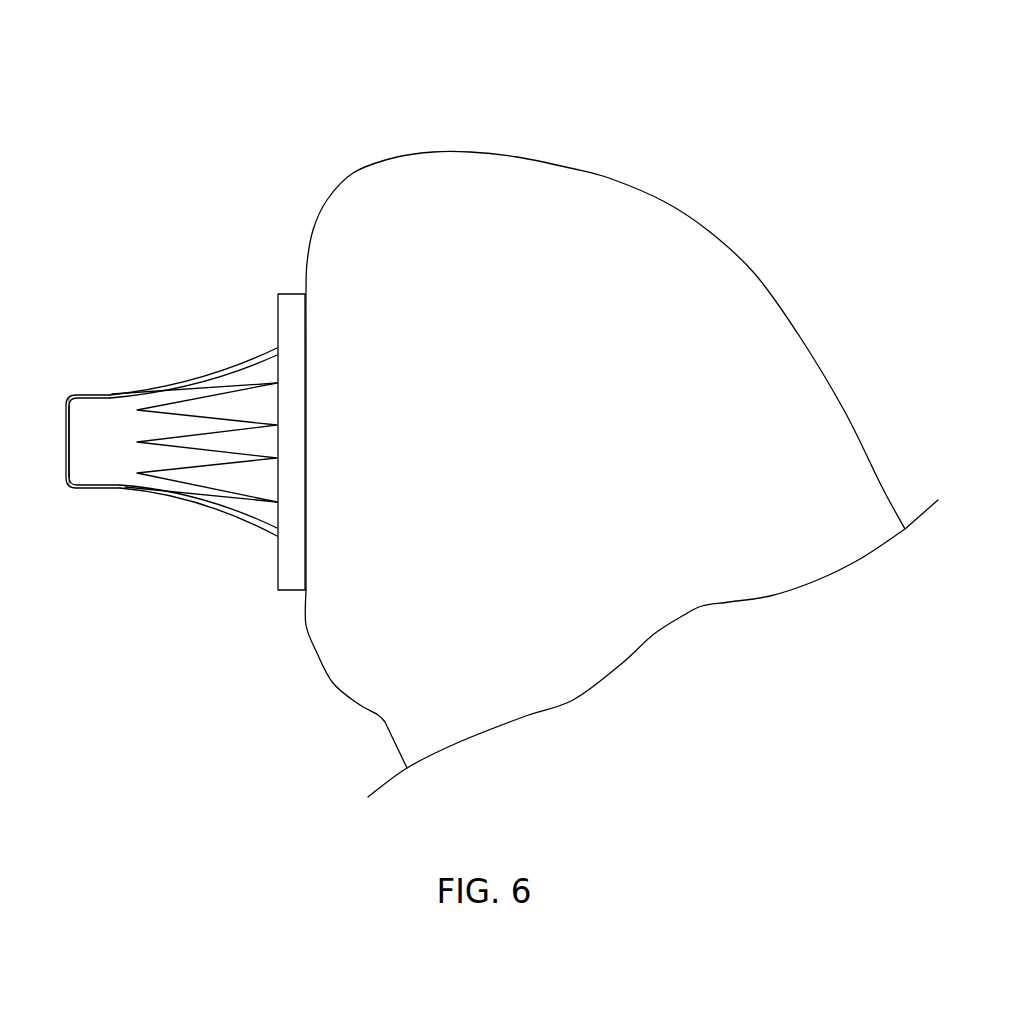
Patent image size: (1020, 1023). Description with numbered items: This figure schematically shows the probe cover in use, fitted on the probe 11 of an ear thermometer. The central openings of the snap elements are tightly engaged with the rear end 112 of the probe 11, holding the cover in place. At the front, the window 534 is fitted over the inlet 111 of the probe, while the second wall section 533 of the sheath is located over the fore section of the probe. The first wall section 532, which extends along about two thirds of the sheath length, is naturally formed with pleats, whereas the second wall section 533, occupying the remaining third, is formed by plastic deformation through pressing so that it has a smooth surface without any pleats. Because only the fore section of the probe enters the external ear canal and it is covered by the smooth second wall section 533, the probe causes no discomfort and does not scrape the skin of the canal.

The probe 11 is at (240, 360).
The inlet 111 is at (70, 418).
The rear end 112 is at (307, 330).
The first wall section 532 is at (203, 477).
The second wall section 533 is at (101, 472).
The window 534 is at (67, 432).